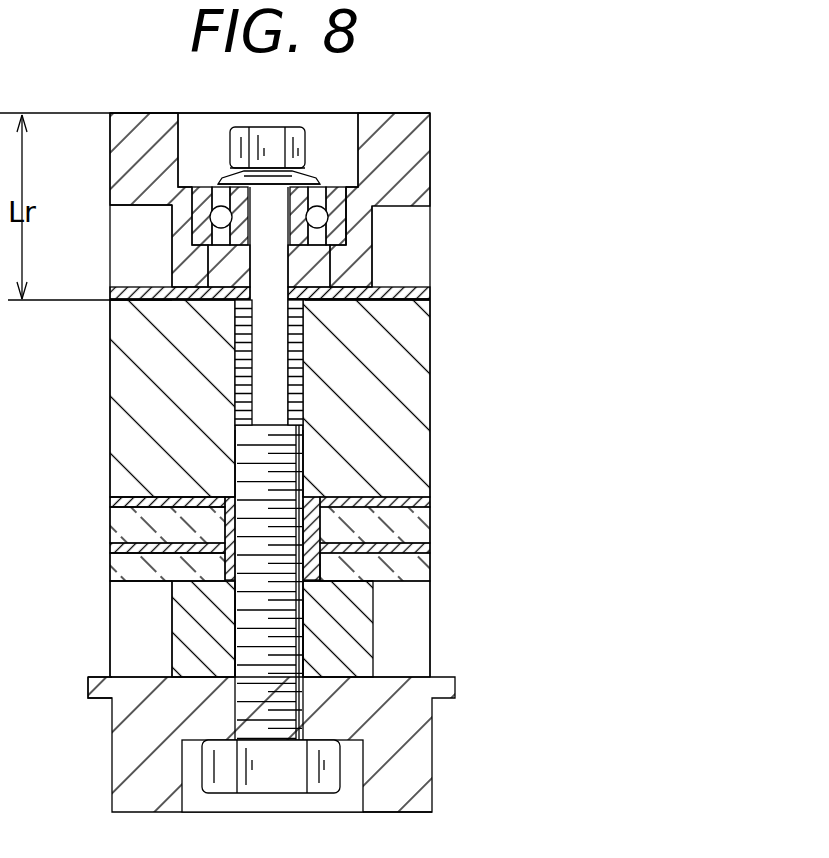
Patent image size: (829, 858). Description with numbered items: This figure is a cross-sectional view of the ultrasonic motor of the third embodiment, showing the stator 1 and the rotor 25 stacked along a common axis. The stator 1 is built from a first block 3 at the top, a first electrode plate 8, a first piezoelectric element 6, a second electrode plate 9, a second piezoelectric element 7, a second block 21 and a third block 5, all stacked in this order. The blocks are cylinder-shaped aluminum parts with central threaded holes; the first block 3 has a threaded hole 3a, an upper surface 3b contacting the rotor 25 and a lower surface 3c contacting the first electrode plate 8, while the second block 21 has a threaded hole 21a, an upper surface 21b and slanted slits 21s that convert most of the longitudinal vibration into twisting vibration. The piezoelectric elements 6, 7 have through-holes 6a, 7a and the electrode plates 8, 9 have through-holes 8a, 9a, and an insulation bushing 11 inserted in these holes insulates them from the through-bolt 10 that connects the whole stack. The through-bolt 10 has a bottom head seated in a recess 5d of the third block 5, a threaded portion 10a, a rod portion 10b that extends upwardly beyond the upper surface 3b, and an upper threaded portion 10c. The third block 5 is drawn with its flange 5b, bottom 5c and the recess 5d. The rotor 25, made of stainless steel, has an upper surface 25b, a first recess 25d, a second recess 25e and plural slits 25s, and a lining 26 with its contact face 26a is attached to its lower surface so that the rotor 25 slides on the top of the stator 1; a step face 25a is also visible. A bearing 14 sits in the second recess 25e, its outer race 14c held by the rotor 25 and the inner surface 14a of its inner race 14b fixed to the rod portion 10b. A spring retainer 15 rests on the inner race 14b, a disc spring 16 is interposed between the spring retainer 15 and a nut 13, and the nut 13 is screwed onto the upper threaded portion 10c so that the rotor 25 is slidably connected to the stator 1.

The stator 1 is at (485, 452).
The first block 3 is at (425, 462).
The threaded hole 3a is at (307, 362).
The upper surface 3b is at (125, 300).
The lower surface 3c is at (110, 497).
The third block 5 is at (269, 755).
The flange of base 5b is at (112, 675).
The bottom of base 5c is at (417, 812).
The recess 5d is at (363, 793).
The first piezoelectric element 6 is at (422, 530).
The through-hole 6a is at (225, 512).
The second piezoelectric element 7 is at (423, 572).
The through-hole 7a is at (323, 583).
The first electrode plate 8 is at (415, 498).
The through-hole 8a is at (317, 490).
The second electrode plate 9 is at (423, 547).
The through-hole 9a is at (230, 584).
The through-bolt 10 is at (283, 477).
The threaded portion 10a is at (245, 637).
The rod portion 10b is at (310, 403).
The upper threaded portion 10c is at (262, 178).
The insulation bushing 11 is at (225, 497).
The nut 13 is at (270, 135).
The bearing 14 is at (332, 186).
The inner surface 14a is at (248, 252).
The inner race 14b is at (338, 258).
The outer race 14c is at (377, 207).
The spring retainer 15 is at (222, 177).
The disc spring 16 is at (236, 172).
The second block 21 is at (425, 615).
The threaded hole 21a is at (307, 643).
The upper surface 21b is at (112, 575).
The slits 21s is at (125, 622).
The rotor 25 is at (427, 158).
The housing lower face 25a is at (328, 298).
The upper surface 25b is at (403, 113).
The first recess 25d is at (350, 128).
The second recess 25e is at (192, 205).
The slits 25s is at (118, 238).
The lining 26 is at (430, 290).
The retaining ring lower face 26a is at (412, 300).